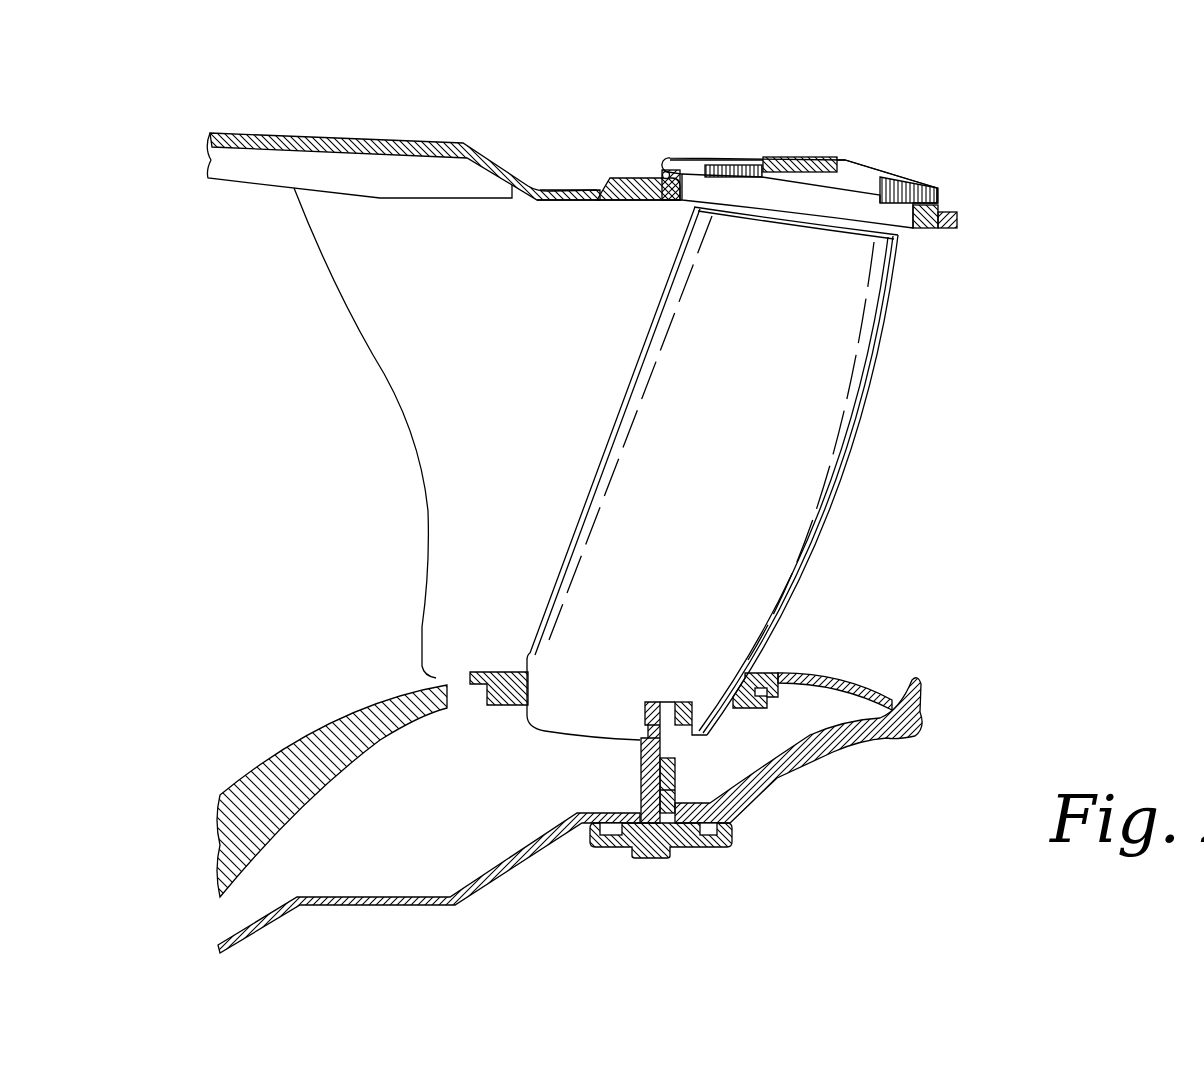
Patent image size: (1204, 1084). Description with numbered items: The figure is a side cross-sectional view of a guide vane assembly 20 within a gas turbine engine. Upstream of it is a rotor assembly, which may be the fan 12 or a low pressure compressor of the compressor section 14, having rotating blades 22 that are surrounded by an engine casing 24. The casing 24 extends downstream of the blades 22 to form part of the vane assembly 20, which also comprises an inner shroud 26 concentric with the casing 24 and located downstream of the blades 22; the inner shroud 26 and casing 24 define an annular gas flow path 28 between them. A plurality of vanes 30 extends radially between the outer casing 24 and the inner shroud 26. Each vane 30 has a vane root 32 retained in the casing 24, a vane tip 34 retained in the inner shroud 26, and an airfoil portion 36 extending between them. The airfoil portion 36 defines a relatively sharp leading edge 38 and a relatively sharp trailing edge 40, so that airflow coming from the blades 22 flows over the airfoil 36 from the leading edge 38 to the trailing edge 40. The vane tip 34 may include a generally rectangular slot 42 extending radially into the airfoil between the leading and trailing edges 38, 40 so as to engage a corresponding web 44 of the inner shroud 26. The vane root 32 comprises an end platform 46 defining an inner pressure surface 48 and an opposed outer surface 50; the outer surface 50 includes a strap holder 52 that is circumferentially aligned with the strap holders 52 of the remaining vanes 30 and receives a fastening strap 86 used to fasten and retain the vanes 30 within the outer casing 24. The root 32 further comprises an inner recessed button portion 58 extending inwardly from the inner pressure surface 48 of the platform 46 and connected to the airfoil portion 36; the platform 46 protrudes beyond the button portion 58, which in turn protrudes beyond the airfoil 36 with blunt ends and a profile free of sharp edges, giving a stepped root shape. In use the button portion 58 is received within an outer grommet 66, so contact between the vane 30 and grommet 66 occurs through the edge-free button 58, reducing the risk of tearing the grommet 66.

The fan 12 is at (403, 130).
The compressor section 14 is at (520, 153).
The vane assembly 20 is at (651, 257).
The rotating blades 22 is at (303, 302).
The engine casing 24 is at (606, 178).
The inner shroud 26 is at (468, 673).
The annular gas flow path 28 is at (478, 368).
The vane 30 is at (741, 471).
The vane root 32 is at (893, 177).
The vane tip 34 is at (707, 733).
The airfoil portion 36 is at (807, 498).
The leading edge 38 is at (603, 455).
The trailing edge 40 is at (818, 545).
The slot 42 is at (643, 708).
The web 44 is at (677, 783).
The end platform 46 is at (920, 187).
The inner pressure surface 48 is at (661, 172).
The outer surface 50 is at (697, 158).
The strap holder 52 is at (847, 163).
The button portion 58 is at (840, 208).
The outer grommet 66 is at (913, 222).
The fastening strap 86 is at (796, 157).